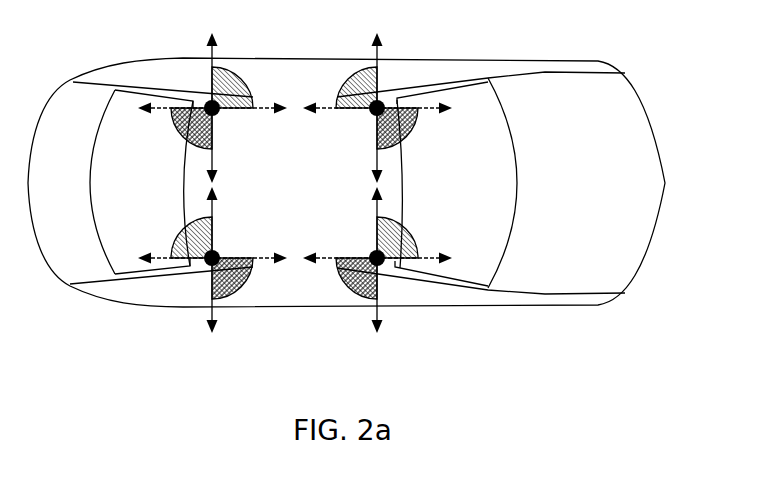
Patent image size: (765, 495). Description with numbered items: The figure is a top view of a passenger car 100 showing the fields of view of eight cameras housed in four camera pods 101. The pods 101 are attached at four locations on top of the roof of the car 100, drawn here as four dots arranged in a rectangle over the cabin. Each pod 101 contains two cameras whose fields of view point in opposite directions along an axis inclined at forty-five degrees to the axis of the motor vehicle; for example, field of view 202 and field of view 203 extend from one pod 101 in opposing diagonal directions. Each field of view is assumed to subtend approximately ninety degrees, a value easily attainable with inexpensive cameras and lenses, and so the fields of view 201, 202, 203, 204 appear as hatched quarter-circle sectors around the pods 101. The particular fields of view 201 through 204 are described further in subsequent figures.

The passenger car 100 is at (603, 108).
The camera pod 101 is at (203, 103).
The field of view 201 is at (254, 112).
The field of view 202 is at (347, 84).
The field of view 203 is at (407, 132).
The field of view 204 is at (410, 236).